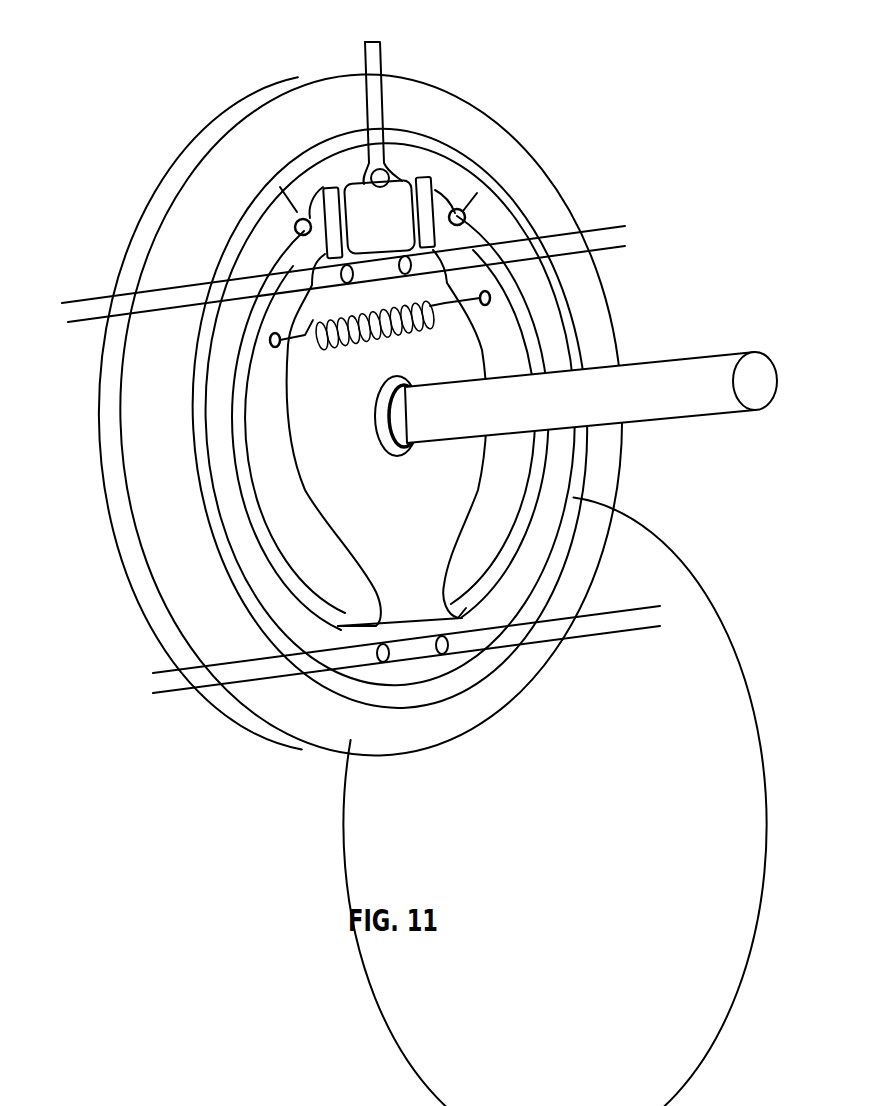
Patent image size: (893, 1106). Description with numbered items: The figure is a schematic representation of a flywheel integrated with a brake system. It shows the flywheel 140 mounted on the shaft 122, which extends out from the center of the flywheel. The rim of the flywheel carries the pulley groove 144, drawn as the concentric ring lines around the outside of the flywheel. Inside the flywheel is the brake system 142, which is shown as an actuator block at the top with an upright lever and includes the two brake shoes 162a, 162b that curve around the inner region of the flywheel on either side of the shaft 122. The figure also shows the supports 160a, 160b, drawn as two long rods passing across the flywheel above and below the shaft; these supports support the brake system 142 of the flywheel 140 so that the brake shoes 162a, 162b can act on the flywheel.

The flywheel 140 is at (455, 30).
The brake system 142 is at (413, 197).
The pulley groove 144 is at (140, 466).
The support 160a is at (610, 224).
The support 160b is at (676, 612).
The brake shoe 162a is at (508, 333).
The brake shoe 162b is at (260, 468).
The shaft 122 is at (693, 358).